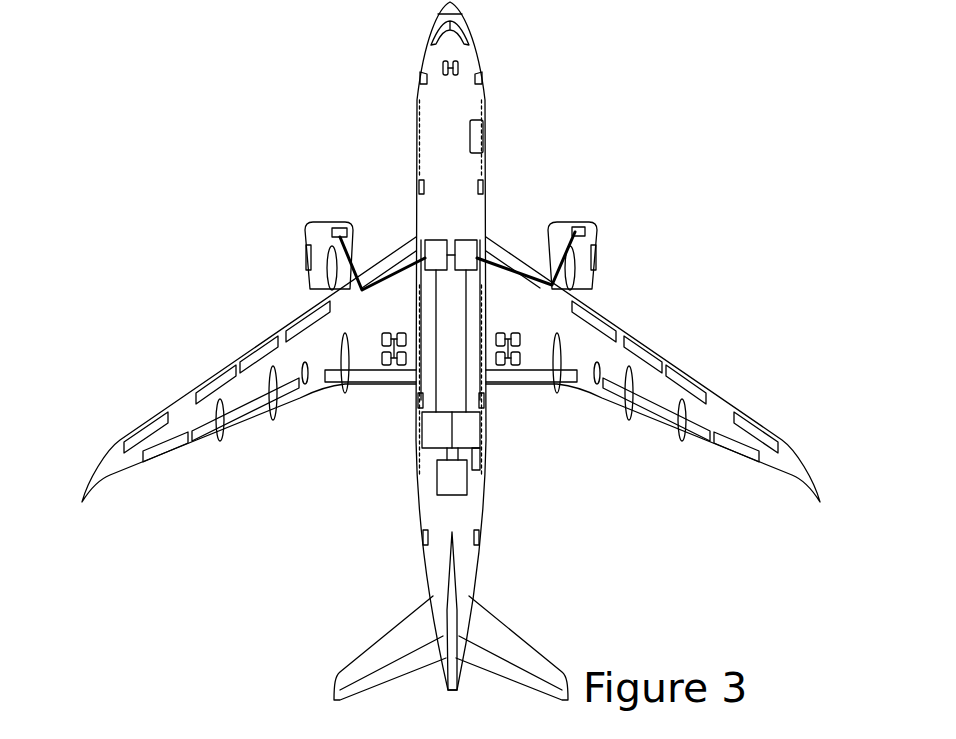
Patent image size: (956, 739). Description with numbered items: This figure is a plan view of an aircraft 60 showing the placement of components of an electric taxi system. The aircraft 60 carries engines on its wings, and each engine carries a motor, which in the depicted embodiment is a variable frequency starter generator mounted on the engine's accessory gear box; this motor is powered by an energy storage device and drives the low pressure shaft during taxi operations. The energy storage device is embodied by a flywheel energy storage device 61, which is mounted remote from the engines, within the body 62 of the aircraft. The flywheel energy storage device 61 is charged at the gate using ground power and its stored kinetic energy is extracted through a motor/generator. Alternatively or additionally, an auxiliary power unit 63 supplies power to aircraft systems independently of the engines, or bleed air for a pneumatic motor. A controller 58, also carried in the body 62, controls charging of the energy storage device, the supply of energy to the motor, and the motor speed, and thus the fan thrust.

The controller 58 is at (467, 427).
The aircraft 60 is at (520, 80).
The flywheel energy storage device 61 is at (430, 242).
The body 62 is at (484, 150).
The auxiliary power unit 63 is at (467, 487).